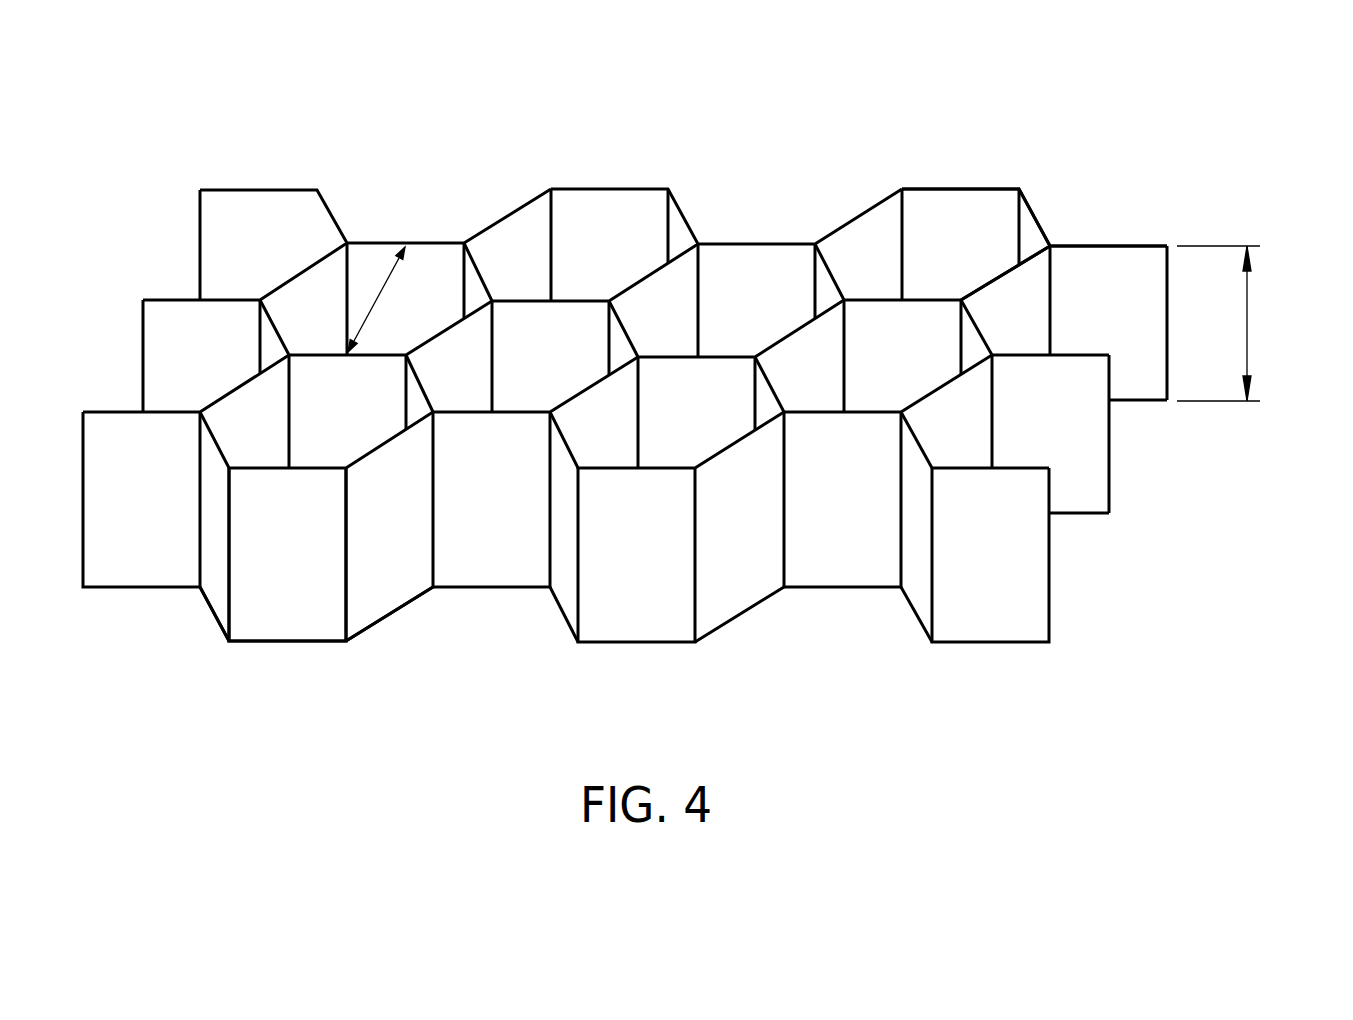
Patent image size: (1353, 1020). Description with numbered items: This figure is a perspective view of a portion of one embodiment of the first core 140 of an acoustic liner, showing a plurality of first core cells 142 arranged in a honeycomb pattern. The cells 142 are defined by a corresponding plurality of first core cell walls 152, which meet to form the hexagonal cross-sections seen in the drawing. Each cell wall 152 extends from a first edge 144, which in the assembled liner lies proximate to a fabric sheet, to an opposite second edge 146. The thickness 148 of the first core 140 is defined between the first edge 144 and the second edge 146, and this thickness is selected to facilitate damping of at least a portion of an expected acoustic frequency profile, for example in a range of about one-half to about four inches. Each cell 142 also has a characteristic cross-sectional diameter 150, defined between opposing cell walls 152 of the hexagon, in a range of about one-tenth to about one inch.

The first core 140 is at (704, 390).
The first core cells 142 is at (873, 258).
The first edge 144 is at (757, 607).
The second edge 146 is at (1005, 262).
The thickness 148 is at (1247, 317).
The characteristic cross-sectional diameter 150 is at (376, 297).
The first core cell walls 152 is at (343, 413).